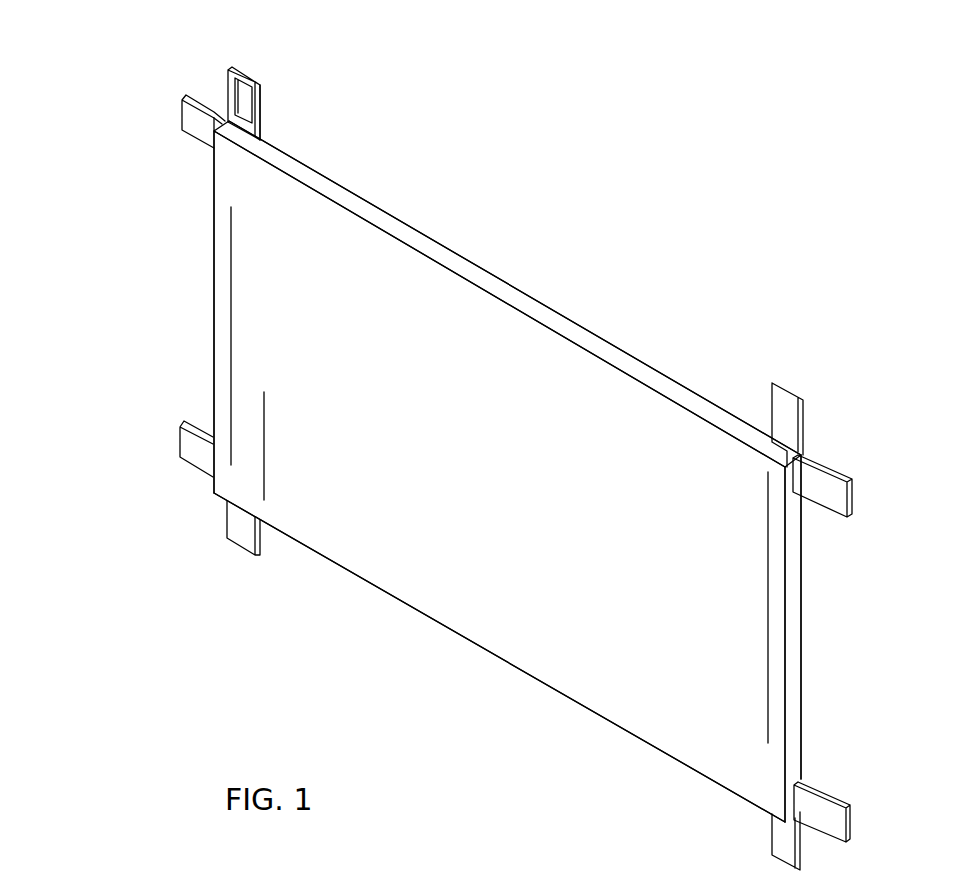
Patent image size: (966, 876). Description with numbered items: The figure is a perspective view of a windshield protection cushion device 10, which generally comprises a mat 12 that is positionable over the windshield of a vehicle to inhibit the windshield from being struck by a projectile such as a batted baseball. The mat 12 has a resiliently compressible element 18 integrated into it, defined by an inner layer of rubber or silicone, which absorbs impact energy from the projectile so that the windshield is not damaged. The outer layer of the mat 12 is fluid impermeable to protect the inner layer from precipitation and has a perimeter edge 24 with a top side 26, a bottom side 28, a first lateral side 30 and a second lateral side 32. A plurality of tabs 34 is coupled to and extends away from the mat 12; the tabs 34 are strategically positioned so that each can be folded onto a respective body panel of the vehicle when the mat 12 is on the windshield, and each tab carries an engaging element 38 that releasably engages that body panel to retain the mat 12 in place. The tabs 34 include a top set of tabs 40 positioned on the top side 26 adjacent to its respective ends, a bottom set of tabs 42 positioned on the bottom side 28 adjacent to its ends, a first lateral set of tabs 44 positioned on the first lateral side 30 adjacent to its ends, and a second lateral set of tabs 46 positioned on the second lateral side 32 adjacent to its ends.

The windshield protection cushion device 10 is at (693, 146).
The mat 12 is at (584, 304).
The resiliently compressible element 18 is at (559, 646).
The perimeter edge 24 is at (442, 246).
The top side 26 is at (332, 179).
The bottom side 28 is at (423, 637).
The first lateral side 30 is at (193, 357).
The second lateral side 32 is at (808, 564).
The tabs 34 is at (822, 377).
The engaging element 38 is at (228, 72).
The top set of tabs 40 is at (264, 90).
The bottom set of tabs 42 is at (263, 558).
The first lateral set of tabs 44 is at (184, 96).
The second lateral set of tabs 46 is at (856, 508).